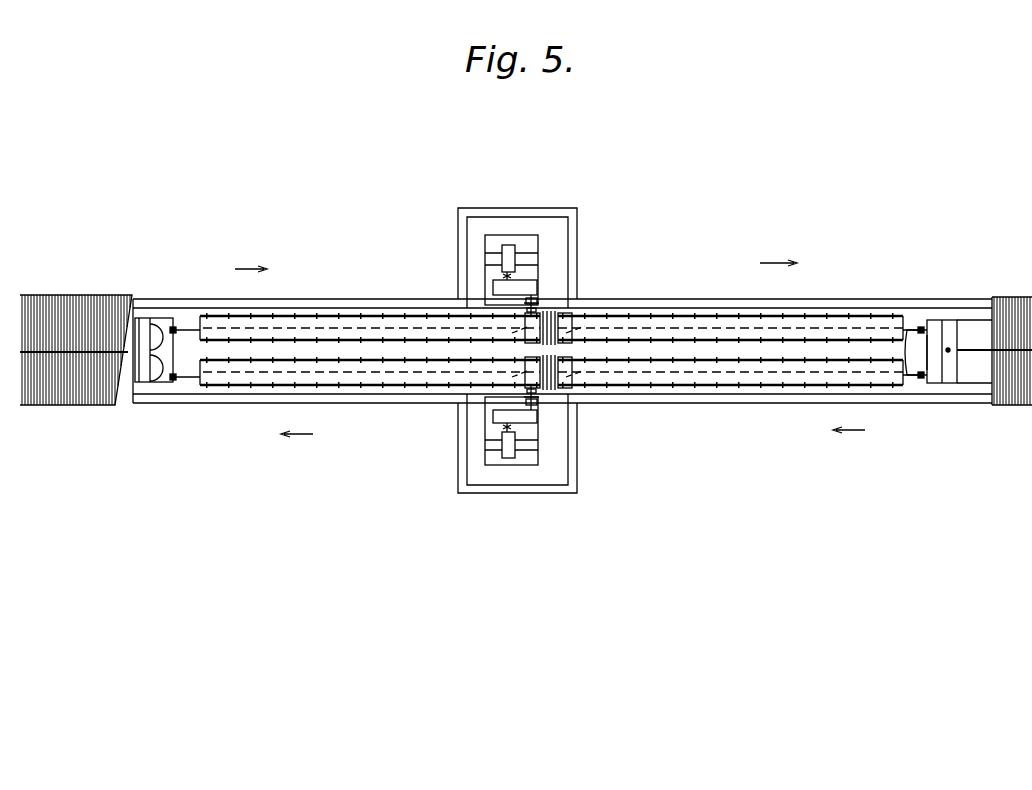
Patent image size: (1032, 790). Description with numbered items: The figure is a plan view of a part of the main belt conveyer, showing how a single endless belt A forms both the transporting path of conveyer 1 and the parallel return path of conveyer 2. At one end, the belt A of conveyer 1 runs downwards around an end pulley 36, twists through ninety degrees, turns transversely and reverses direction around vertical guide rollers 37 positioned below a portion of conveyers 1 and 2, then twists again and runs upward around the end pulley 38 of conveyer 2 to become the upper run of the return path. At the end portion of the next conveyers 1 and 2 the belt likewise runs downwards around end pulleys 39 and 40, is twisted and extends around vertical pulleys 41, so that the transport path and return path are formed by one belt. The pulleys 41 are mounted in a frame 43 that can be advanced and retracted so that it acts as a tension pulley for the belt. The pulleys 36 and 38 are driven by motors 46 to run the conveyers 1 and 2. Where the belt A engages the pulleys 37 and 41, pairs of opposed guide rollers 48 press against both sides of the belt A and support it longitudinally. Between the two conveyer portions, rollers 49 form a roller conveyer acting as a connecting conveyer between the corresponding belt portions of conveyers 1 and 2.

The conveyer 1 is at (346, 316).
The conveyer 2 is at (346, 386).
The end pulley 36 is at (525, 326).
The vertical guide rollers 37 is at (155, 352).
The end pulley 38 is at (512, 372).
The end pulley 39 is at (572, 330).
The end pulley 40 is at (575, 373).
The vertical pulleys 41 is at (965, 332).
The frame 43 is at (948, 376).
The motors 46 is at (507, 248).
The opposed guide rollers 48 is at (176, 374).
The rollers 49 is at (562, 313).
The belt A is at (196, 383).